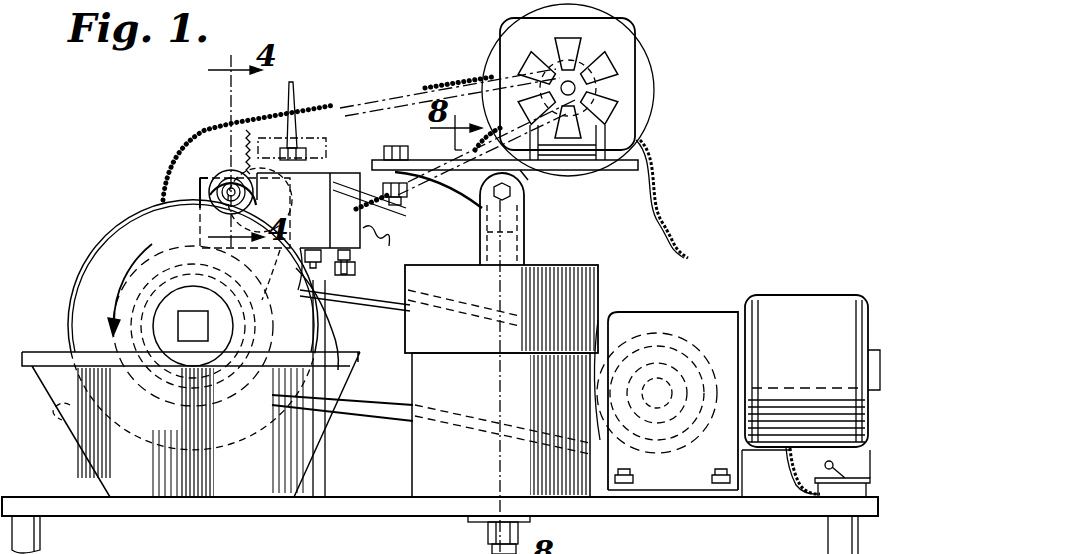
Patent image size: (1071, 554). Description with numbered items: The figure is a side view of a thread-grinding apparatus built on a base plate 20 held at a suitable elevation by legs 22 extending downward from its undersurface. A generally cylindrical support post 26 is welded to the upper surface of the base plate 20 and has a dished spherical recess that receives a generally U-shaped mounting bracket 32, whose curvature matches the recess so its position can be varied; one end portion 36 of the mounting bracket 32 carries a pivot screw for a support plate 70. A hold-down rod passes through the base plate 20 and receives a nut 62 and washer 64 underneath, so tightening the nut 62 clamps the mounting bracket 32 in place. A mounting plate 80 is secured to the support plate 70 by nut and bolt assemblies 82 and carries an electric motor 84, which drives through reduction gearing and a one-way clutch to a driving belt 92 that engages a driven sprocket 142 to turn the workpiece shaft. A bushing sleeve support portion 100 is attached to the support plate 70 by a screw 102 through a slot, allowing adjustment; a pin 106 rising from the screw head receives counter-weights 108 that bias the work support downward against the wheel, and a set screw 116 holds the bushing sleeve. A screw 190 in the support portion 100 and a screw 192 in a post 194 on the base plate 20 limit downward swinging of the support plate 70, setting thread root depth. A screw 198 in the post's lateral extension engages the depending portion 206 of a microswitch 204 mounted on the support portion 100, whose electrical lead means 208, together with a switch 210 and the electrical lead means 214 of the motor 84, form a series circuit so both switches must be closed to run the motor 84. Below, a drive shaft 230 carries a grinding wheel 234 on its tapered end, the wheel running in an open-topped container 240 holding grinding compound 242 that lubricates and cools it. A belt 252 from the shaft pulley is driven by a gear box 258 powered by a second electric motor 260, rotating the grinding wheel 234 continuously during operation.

The base plate 20 is at (650, 510).
The legs 22 is at (42, 540).
The support post 26 is at (410, 458).
The mounting bracket 32 is at (535, 225).
The end portion of mounting bracket 36 is at (525, 176).
The nut 62 is at (482, 538).
The washer 64 is at (530, 519).
The support plate 70 is at (462, 188).
The mounting plate 80 is at (590, 172).
The nut and bolt assemblies 82 is at (400, 140).
The electric motor 84 is at (660, 82).
The driving belt 92 is at (392, 80).
The bushing sleeve support portion 100 is at (370, 160).
The screw 102 is at (340, 190).
The pin 106 is at (296, 92).
The counter-weights 108 is at (292, 138).
The set screw 116 is at (195, 190).
The driven sprocket 142 is at (188, 147).
The screw 190 is at (306, 257).
The screw 192 is at (306, 306).
The post 194 is at (330, 336).
The screw 198 is at (352, 284).
The microswitch 204 is at (365, 212).
The depending portion 206 is at (352, 265).
The electrical lead means 208 is at (372, 244).
The switch 210 is at (838, 464).
The electrical lead means 214 is at (668, 174).
The drive shaft 230 is at (187, 547).
The grinding wheel 234 is at (100, 248).
The open-topped container 240 is at (84, 460).
The grinding compound 242 is at (52, 405).
The belt 252 is at (606, 318).
The gear box 258 is at (732, 338).
The electric motor 260 is at (820, 338).